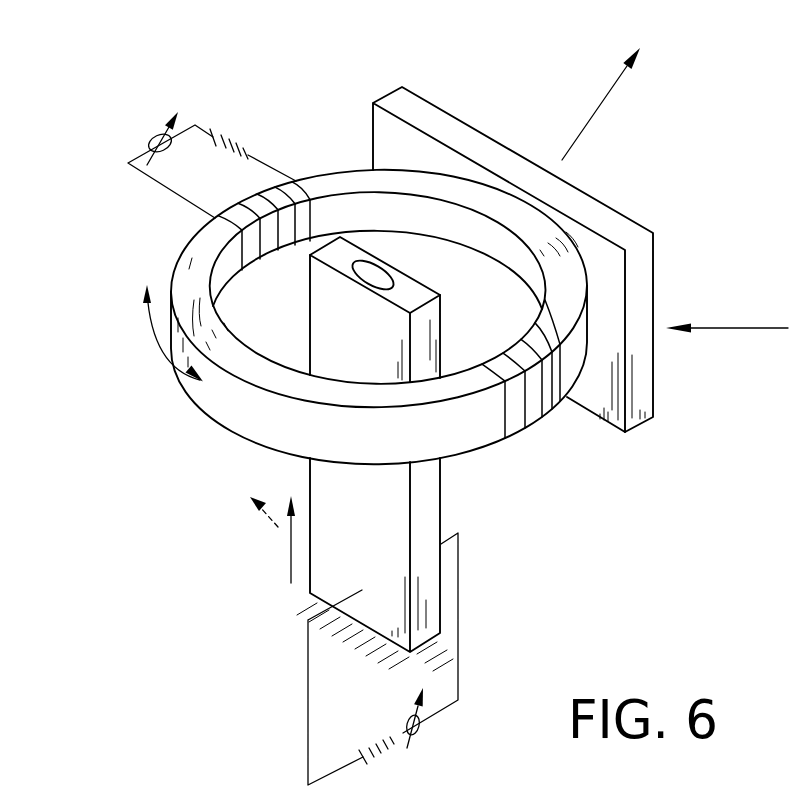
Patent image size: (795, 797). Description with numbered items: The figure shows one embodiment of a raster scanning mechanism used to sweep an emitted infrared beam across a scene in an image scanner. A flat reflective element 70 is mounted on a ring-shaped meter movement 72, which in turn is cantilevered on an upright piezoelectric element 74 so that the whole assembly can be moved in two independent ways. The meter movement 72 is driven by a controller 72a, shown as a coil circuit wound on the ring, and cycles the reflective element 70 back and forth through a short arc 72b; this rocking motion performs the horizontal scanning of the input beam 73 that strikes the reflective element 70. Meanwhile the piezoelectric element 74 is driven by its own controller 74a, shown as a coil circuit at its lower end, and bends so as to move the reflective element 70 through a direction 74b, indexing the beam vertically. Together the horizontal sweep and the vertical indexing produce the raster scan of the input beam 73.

The reflective element 70 is at (432, 99).
The meter movement 72 is at (144, 260).
The controller 72a is at (147, 143).
The short arc 72b is at (148, 330).
The input beam 73 is at (719, 328).
The piezoelectric element 74 is at (442, 482).
The controller 74a is at (423, 732).
The direction 74b is at (278, 527).